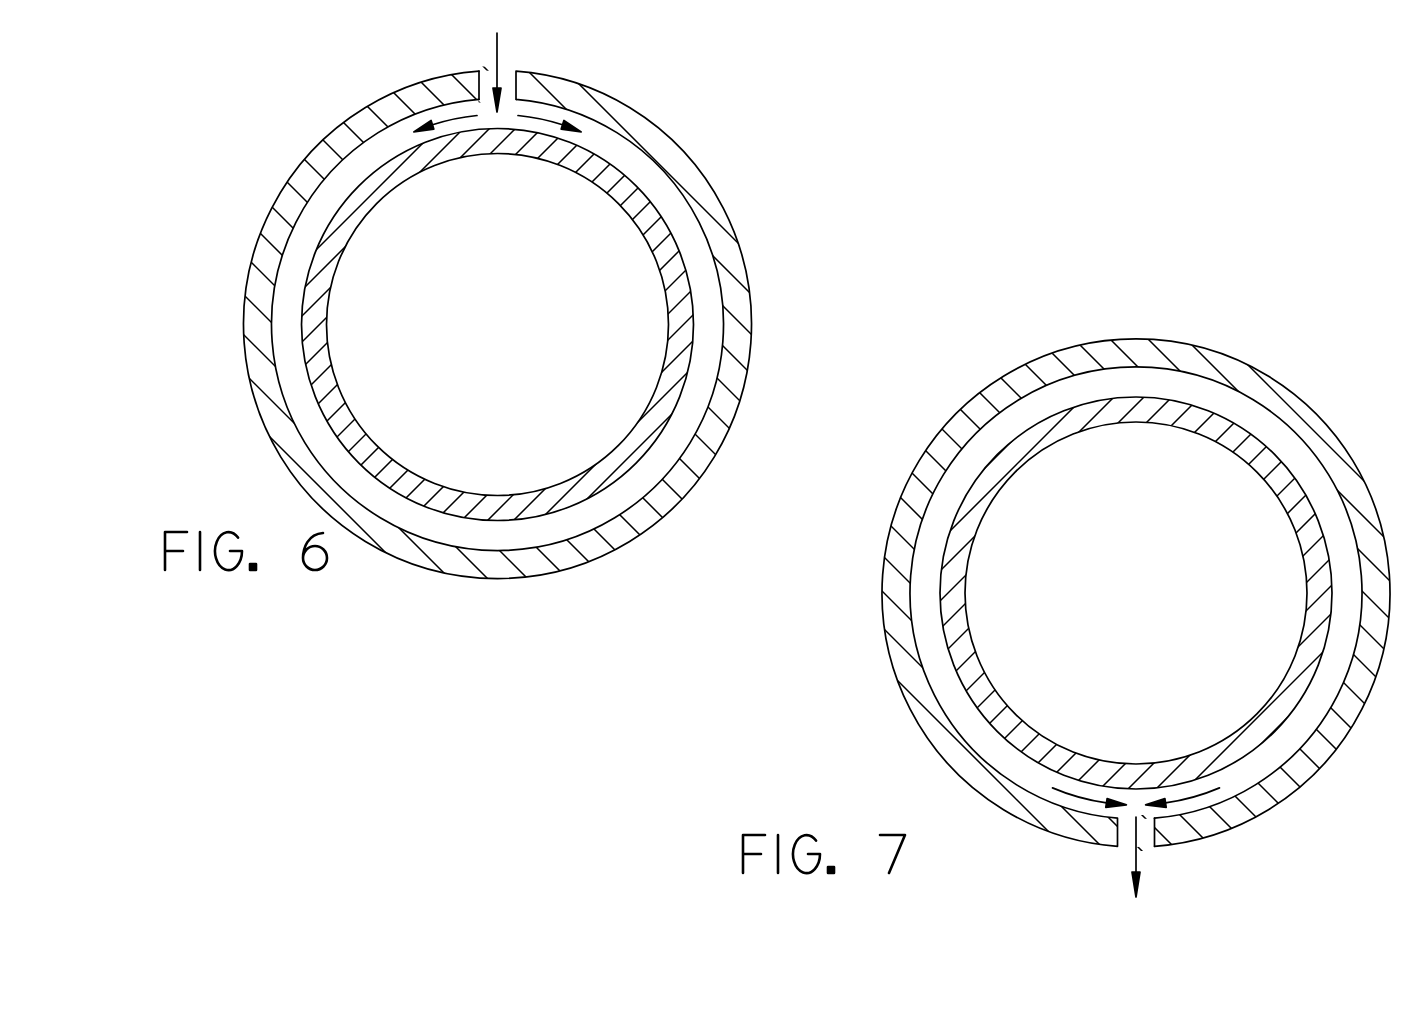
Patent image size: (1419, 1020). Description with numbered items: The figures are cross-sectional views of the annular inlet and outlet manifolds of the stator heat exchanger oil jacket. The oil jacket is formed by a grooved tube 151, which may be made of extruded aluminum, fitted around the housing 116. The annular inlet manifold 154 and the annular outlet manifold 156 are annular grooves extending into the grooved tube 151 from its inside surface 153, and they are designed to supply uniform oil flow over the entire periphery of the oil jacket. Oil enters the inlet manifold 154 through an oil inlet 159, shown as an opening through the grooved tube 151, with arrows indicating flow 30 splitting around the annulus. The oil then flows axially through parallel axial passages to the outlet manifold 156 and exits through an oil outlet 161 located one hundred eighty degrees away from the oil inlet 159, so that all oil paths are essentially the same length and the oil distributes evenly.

In FIG. 6, the fluid flow 30 is at (505, 60).
In FIG. 7, the fluid flow 30 is at (1143, 840).
In FIG. 6, the housing 116 is at (626, 432).
In FIG. 7, the housing 116 is at (1243, 463).
In FIG. 6, the grooved tube 151 is at (755, 310).
In FIG. 7, the grooved tube 151 is at (1228, 356).
In FIG. 6, the inside surface 153 is at (553, 148).
In FIG. 7, the inside surface 153 is at (1013, 468).
In FIG. 6, the annular inlet manifold 154 is at (692, 238).
In FIG. 7, the annular outlet manifold 156 is at (1390, 389).
In FIG. 6, the oil inlet 159 is at (490, 80).
In FIG. 7, the oil outlet 161 is at (1130, 832).